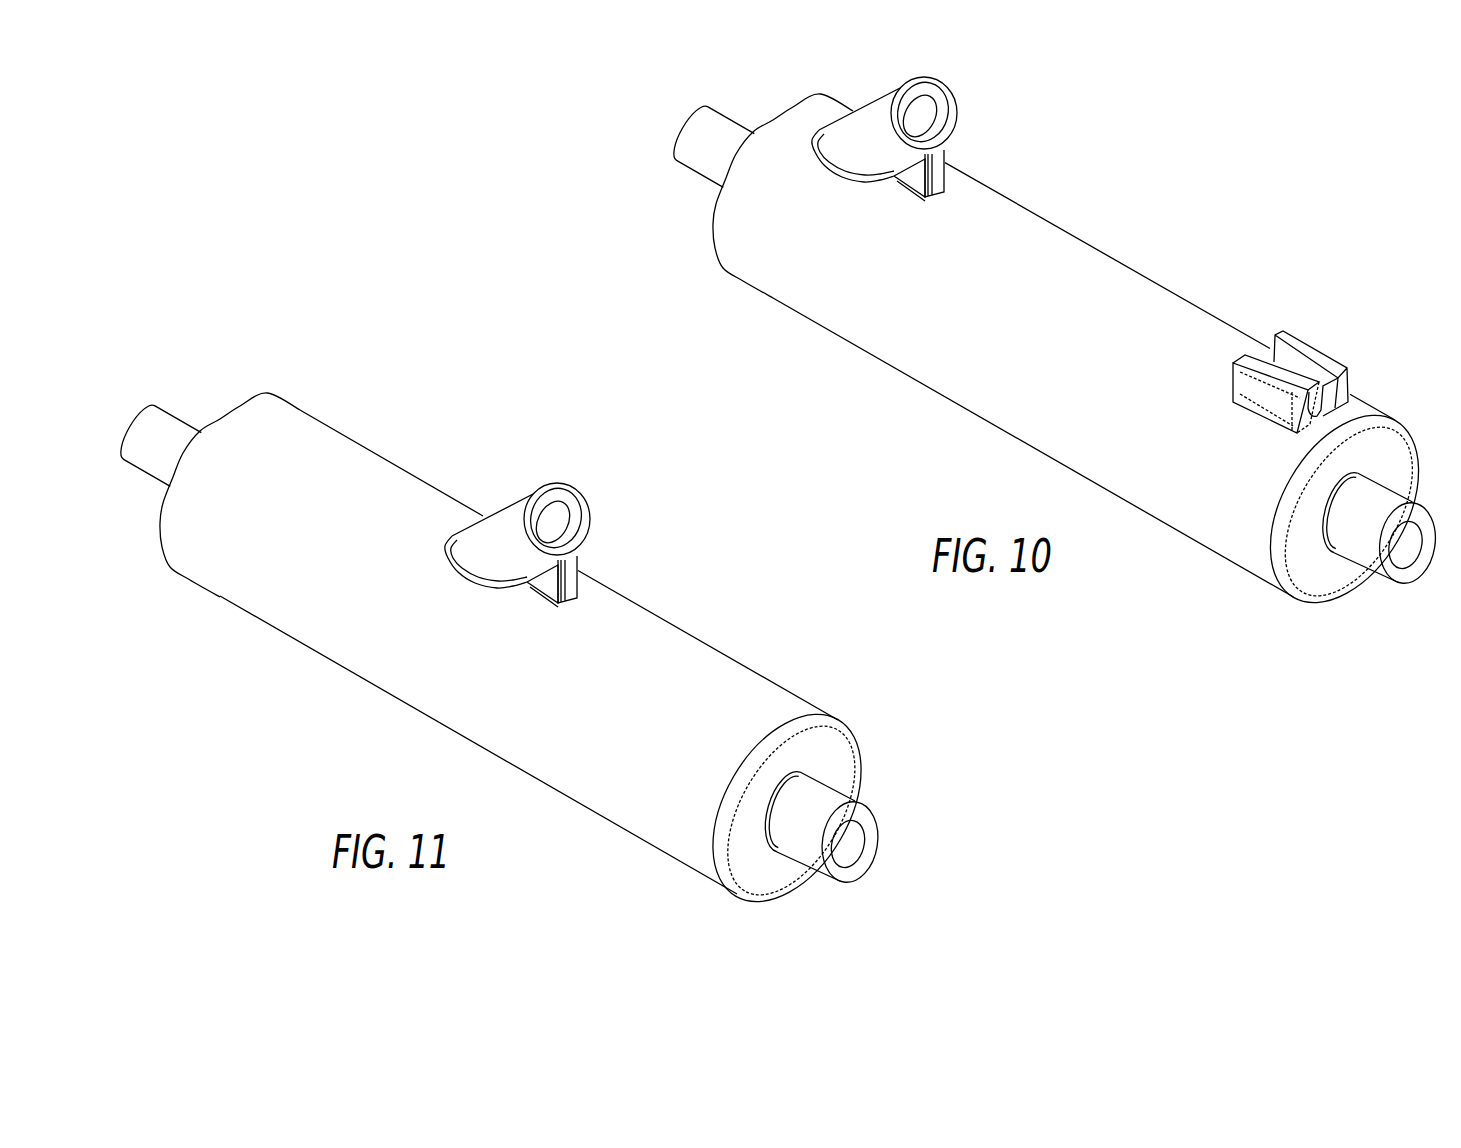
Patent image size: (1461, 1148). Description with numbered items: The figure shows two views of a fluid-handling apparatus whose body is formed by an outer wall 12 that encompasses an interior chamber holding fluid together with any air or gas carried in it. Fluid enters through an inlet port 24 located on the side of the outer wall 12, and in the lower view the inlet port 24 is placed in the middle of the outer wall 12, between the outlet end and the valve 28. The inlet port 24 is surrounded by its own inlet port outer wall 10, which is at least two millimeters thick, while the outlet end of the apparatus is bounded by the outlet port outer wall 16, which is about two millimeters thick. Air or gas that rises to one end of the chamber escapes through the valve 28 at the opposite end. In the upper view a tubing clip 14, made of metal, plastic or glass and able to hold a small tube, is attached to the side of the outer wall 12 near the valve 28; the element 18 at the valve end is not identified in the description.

In FIG. 11, the inlet port outer wall 10 is at (512, 503).
In FIG. 10, the inlet port outer wall 10 is at (878, 96).
In FIG. 11, the outer wall 12 is at (440, 657).
In FIG. 10, the outer wall 12 is at (997, 330).
In FIG. 10, the tubing clip 14 is at (1302, 353).
In FIG. 11, the outlet port outer wall 16 is at (176, 415).
In FIG. 10, the outlet port outer wall 16 is at (694, 175).
In FIG. 11, the end boss 18 is at (803, 862).
In FIG. 10, the end boss 18 is at (1355, 565).
In FIG. 11, the inlet port 24 is at (553, 523).
In FIG. 10, the inlet port 24 is at (920, 117).
In FIG. 11, the valve 28 is at (840, 837).
In FIG. 10, the valve 28 is at (1395, 542).